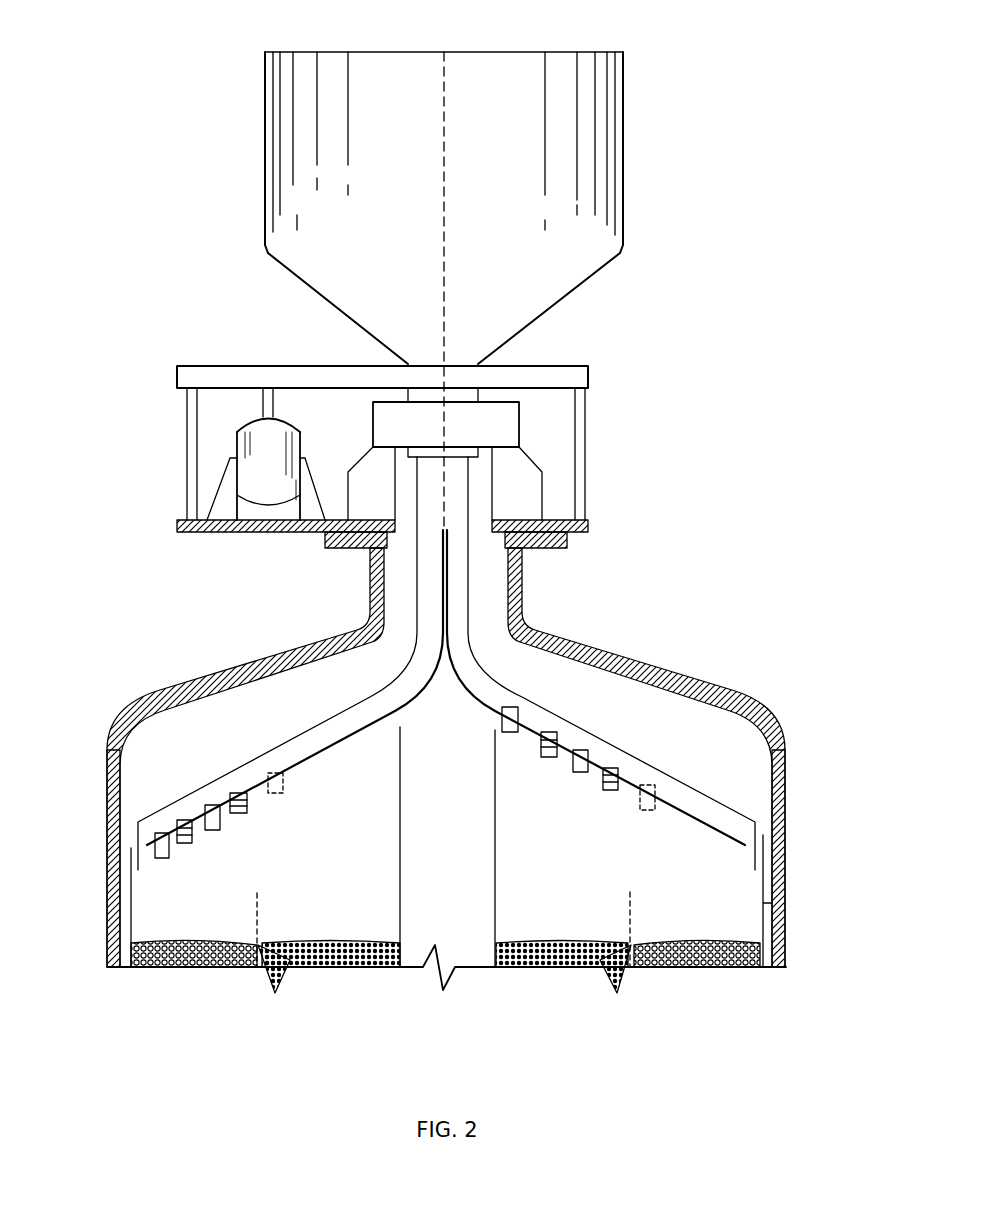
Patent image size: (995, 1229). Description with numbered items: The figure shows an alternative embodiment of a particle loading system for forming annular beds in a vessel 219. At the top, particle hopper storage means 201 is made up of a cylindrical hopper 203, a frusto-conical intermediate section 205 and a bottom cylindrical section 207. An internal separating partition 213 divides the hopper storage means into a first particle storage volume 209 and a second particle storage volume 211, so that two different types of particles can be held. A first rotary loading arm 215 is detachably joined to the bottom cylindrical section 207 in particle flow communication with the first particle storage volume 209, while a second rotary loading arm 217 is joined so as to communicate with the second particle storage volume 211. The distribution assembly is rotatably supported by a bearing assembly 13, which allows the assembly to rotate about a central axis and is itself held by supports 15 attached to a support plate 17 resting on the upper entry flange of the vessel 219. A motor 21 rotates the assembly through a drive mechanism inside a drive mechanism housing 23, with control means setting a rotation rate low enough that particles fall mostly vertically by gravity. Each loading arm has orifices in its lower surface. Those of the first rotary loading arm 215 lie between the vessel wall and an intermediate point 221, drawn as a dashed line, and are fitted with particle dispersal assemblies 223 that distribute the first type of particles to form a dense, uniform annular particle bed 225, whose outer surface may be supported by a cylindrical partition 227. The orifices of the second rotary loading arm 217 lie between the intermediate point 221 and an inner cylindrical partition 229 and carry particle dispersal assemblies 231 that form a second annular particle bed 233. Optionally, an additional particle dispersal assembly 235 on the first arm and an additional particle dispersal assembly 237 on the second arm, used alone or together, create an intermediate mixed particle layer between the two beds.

The particle hopper storage means 201 is at (230, 113).
The cylindrical hopper 203 is at (623, 118).
The frusto-conical intermediate section 205 is at (548, 310).
The bottom cylindrical section 207 is at (406, 396).
The first particle storage volume 209 is at (318, 200).
The second particle storage volume 211 is at (582, 213).
The internal separating partition 213 is at (438, 100).
The drive mechanism housing 23 is at (230, 366).
The bearing assembly 13 is at (519, 418).
The supports 15 is at (375, 465).
The support plate 17 is at (588, 527).
The motor 21 is at (253, 481).
The vessel 219 is at (645, 656).
The first rotary loading arm 215 is at (308, 730).
The second rotary loading arm 217 is at (603, 734).
The particle dispersal assemblies 223 is at (162, 858).
The particle dispersal assemblies 231 is at (510, 732).
The additional particle dispersal assembly 235 is at (282, 795).
The additional particle dispersal assembly 237 is at (648, 810).
The inner cylindrical partition 229 is at (400, 800).
The intermediate point 221 is at (262, 918).
The annular particle bed 225 is at (162, 967).
The annular particle bed 233 is at (335, 967).
The cylindrical partition 227 is at (120, 912).